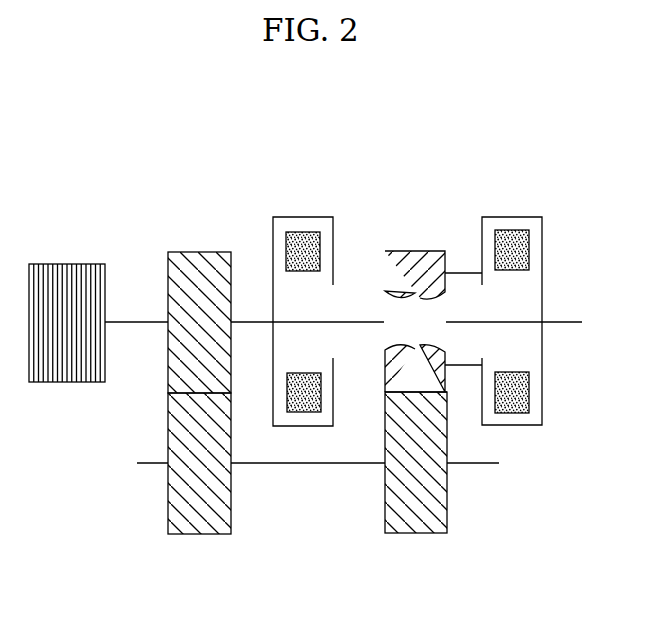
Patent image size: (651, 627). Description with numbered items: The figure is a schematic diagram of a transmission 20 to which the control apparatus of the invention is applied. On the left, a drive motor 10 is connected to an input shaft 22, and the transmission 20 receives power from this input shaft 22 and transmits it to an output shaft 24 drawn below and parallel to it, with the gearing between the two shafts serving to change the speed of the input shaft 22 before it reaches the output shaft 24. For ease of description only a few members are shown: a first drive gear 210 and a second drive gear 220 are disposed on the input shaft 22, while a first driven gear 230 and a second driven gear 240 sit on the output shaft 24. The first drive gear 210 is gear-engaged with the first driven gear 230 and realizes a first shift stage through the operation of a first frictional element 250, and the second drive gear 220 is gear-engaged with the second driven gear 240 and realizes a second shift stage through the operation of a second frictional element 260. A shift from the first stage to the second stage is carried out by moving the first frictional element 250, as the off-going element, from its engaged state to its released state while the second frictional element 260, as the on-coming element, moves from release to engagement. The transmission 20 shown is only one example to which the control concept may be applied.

The drive motor 10 is at (67, 264).
The transmission 20 is at (362, 222).
The input shaft 22 is at (137, 322).
The output shaft 24 is at (490, 463).
The first drive gear 210 is at (415, 251).
The second drive gear 220 is at (198, 252).
The first driven gear 230 is at (417, 533).
The second driven gear 240 is at (200, 534).
The first frictional element 250 is at (510, 217).
The second frictional element 260 is at (302, 217).